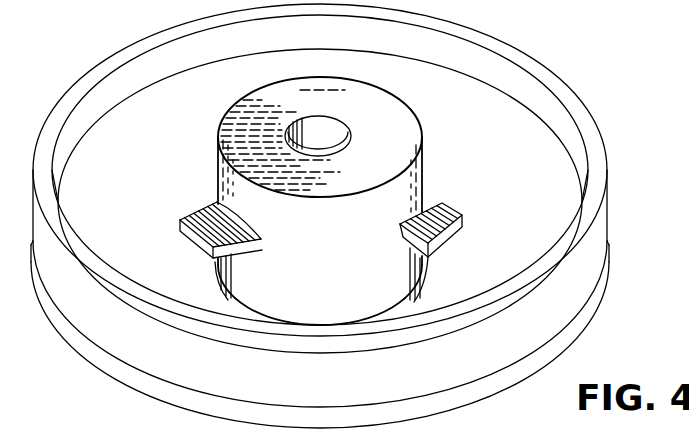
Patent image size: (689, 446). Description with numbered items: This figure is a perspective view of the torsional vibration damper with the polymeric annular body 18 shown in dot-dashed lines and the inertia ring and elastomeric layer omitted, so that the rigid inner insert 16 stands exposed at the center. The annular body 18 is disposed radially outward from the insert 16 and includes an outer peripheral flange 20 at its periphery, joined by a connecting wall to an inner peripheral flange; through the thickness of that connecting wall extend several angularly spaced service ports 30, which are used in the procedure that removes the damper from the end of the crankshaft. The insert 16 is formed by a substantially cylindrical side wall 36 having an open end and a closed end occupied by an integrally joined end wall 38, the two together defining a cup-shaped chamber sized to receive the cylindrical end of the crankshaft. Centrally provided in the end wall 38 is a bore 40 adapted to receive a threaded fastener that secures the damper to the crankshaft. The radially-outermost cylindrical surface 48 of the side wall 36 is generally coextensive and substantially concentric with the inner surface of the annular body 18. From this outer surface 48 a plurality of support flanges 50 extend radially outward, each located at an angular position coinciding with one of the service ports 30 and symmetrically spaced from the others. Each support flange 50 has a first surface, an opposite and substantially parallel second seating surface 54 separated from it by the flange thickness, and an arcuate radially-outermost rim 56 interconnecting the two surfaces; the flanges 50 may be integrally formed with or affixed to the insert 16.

The inner insert 16 is at (320, 201).
The annular body 18 is at (611, 193).
The outer peripheral flange 20 is at (574, 103).
The service ports 30 is at (323, 231).
The side wall 36 is at (320, 201).
The end wall 38 is at (257, 118).
The bore 40 is at (314, 142).
The radially-outermost cylindrical surface 48 is at (328, 303).
The support flanges 50 is at (198, 215).
The second seating surface 54 is at (224, 278).
The arcuate radially-outermost rim 56 is at (205, 241).